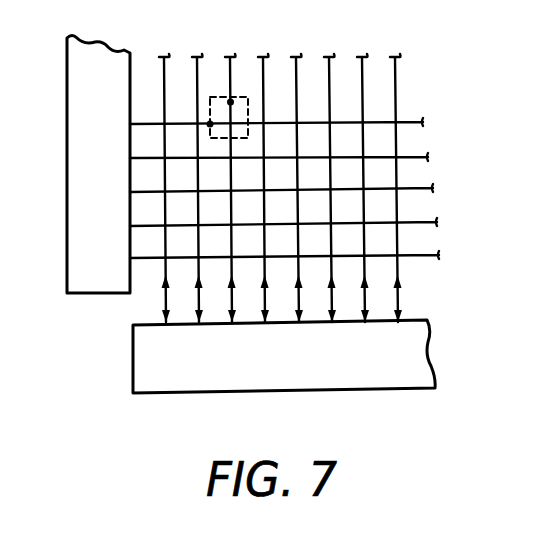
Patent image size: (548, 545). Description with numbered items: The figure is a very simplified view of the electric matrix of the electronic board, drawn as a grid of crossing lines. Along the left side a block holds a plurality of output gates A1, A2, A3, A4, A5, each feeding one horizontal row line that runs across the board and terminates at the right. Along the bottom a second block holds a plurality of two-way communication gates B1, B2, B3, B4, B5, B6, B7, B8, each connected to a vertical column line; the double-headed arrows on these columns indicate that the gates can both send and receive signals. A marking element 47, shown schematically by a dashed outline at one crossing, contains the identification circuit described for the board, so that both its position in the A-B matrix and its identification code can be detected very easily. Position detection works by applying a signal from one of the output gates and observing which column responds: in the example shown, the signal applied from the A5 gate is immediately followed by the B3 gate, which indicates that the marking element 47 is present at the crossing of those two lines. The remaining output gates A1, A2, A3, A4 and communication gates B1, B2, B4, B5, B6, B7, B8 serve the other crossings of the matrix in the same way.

The marking element 47 is at (238, 98).
The output gate A1 is at (261, 258).
The output gate A2 is at (260, 226).
The output gate A3 is at (258, 192).
The output gate A4 is at (256, 158).
The output gate A5 is at (253, 124).
The two-way communication gate B1 is at (167, 206).
The two-way communication gate B2 is at (200, 206).
The two-way communication gate B3 is at (233, 206).
The two-way communication gate B4 is at (267, 206).
The two-way communication gate B5 is at (301, 206).
The two-way communication gate B6 is at (334, 206).
The two-way communication gate B7 is at (367, 206).
The two-way communication gate B8 is at (400, 206).